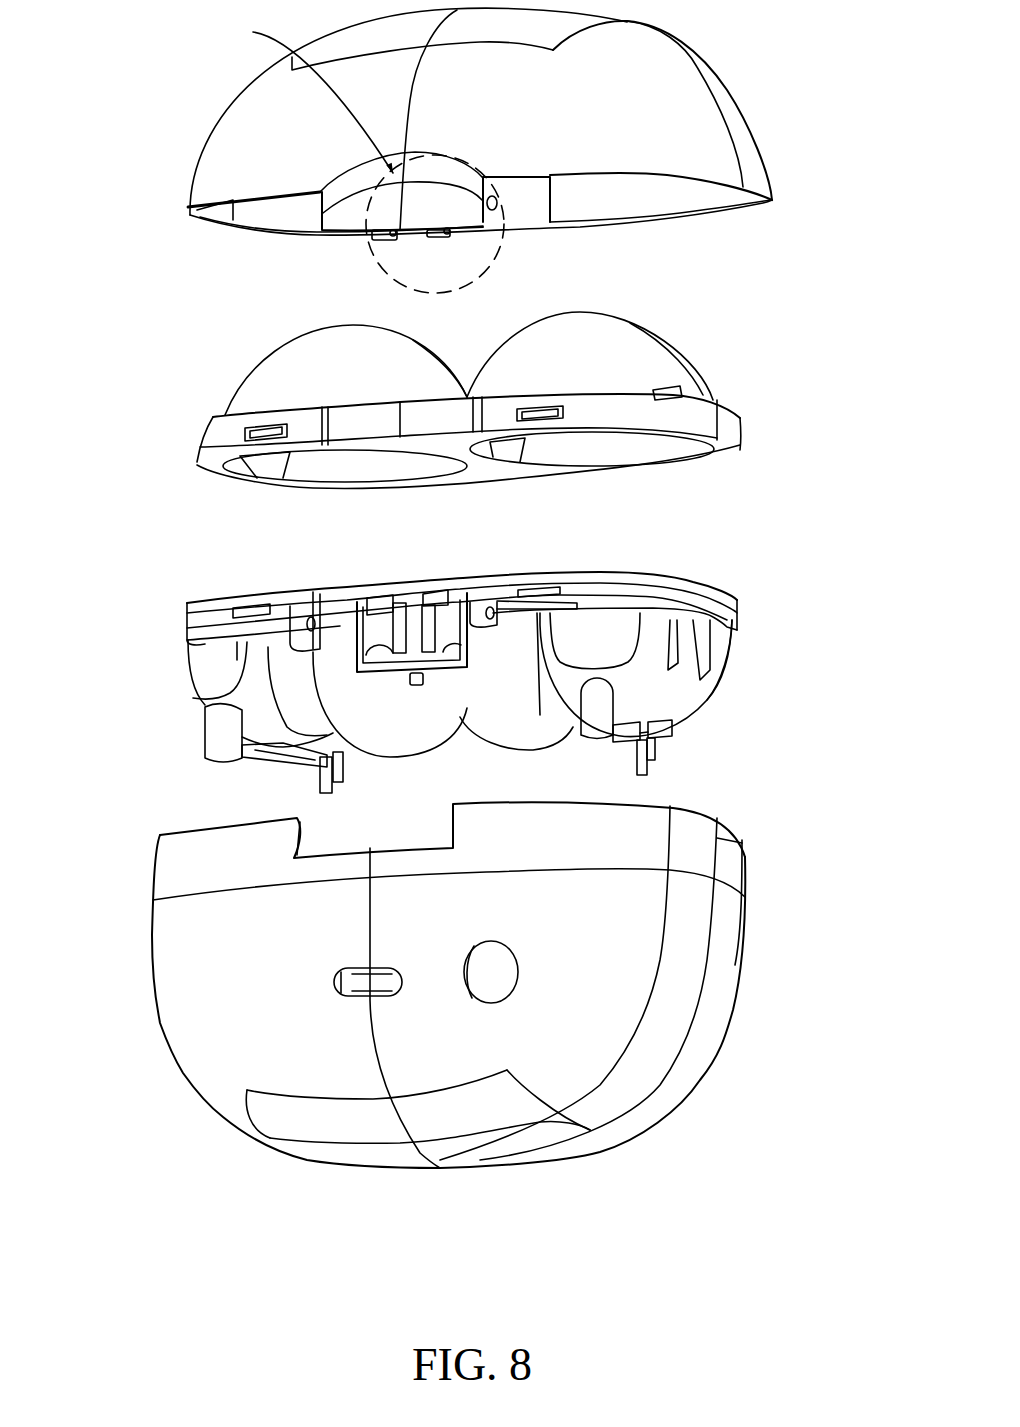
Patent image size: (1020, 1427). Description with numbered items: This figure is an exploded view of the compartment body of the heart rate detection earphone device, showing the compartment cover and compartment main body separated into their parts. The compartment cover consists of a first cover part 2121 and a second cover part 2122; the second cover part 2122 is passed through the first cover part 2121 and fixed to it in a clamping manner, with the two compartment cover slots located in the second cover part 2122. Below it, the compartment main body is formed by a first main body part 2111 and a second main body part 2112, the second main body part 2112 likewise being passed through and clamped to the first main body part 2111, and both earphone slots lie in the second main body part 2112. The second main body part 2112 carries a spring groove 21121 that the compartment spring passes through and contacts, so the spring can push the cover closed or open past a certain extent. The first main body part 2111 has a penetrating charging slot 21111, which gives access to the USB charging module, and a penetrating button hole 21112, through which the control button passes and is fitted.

The first cover part 2121 is at (707, 137).
The second cover part 2122 is at (715, 425).
The second main body part 2112 is at (470, 643).
The spring groove 21121 is at (365, 647).
The first main body part 2111 is at (477, 1037).
The charging slot 21111 is at (350, 996).
The button hole 21112 is at (497, 987).